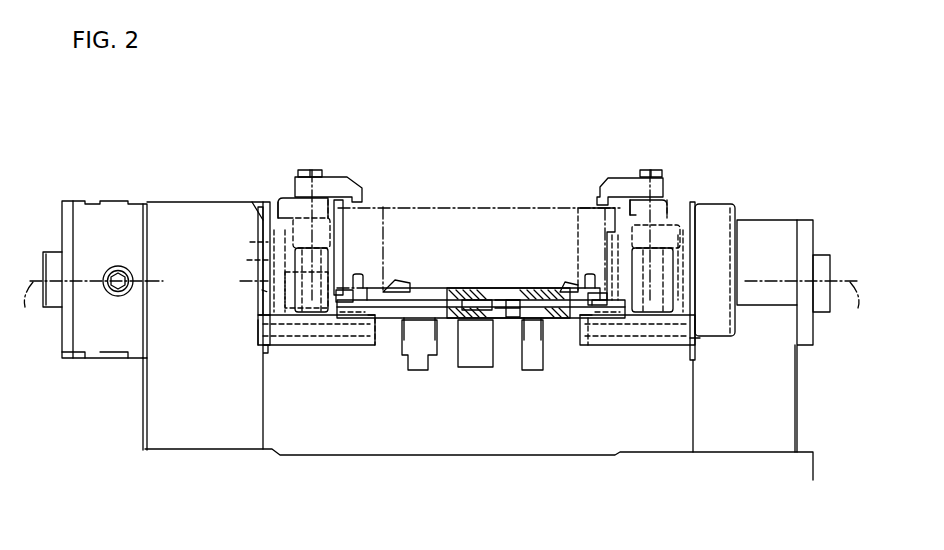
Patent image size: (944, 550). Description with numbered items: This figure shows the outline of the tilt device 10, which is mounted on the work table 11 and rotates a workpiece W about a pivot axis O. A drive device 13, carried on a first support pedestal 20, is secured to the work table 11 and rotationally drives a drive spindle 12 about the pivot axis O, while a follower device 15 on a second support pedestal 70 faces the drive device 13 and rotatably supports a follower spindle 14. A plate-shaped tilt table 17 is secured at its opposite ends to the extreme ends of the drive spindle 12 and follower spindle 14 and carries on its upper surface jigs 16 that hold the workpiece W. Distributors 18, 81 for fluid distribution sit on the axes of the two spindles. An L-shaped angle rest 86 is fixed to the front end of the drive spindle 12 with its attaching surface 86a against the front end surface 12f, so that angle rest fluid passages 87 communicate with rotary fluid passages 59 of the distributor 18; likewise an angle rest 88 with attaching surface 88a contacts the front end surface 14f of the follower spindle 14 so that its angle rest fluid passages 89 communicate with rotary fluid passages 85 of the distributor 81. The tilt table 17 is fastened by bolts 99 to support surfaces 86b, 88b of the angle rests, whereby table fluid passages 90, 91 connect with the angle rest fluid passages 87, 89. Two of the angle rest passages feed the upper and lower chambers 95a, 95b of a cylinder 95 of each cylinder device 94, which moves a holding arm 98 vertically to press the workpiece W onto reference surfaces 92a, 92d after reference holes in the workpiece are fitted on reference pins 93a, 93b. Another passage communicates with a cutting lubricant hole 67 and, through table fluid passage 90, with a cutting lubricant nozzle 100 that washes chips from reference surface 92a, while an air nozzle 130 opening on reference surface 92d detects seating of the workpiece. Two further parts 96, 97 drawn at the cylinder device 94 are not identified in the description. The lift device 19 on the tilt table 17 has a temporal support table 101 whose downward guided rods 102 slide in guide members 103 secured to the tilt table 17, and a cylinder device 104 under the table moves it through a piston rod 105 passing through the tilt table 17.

The tilt device 10 is at (122, 148).
The work table 11 is at (805, 470).
The drive spindle 12 is at (247, 260).
The front end surface 12f is at (283, 345).
The drive device 13 is at (199, 200).
The follower spindle 14 is at (707, 208).
The front end surface 14f is at (690, 338).
The follower device 15 is at (756, 220).
The jigs 16 is at (323, 155).
The tilt table 17 is at (452, 320).
The distributor 18 is at (48, 253).
The lift device 19 is at (482, 290).
The first support pedestal 20 is at (167, 203).
The rotary fluid passages 59 is at (250, 242).
The cutting lubricant hole 67 is at (262, 290).
The second support pedestal 70 is at (782, 228).
The distributor 81 is at (826, 262).
The rotary fluid passages 85 is at (732, 208).
The angle rest 86 is at (290, 345).
The attaching surface 86a is at (258, 315).
The support surface 86b is at (400, 345).
The angle rest fluid passages 87 is at (276, 227).
The angle rest 88 is at (668, 345).
The attaching surface 88a is at (695, 350).
The support surface 88b is at (553, 345).
The angle rest fluid passages 89 is at (692, 208).
The table fluid passage 90 is at (352, 345).
The table fluid passage 91 is at (602, 345).
The reference surface 92a is at (368, 208).
The reference surface 92d is at (598, 292).
The reference pin 93a is at (390, 208).
The reference pin 93b is at (592, 280).
The cylinder device 94 is at (283, 205).
The cylinder 95 is at (323, 345).
The upper chamber 95a is at (300, 235).
The lower chamber 95b is at (310, 345).
The bearing housing 96 is at (293, 345).
The clamp shaft 97 is at (328, 200).
The holding arm 98 is at (347, 187).
The bolts 99 is at (375, 345).
The cutting lubricant nozzle 100 is at (383, 207).
The temporal support table 101 is at (461, 288).
The guided rods 102 is at (420, 372).
The guide members 103 is at (427, 346).
The cylinder device 104 is at (475, 360).
The piston rod 105 is at (528, 288).
The air nozzle 130 is at (590, 268).
The workpiece W is at (433, 198).
The pivot axis O is at (441, 304).